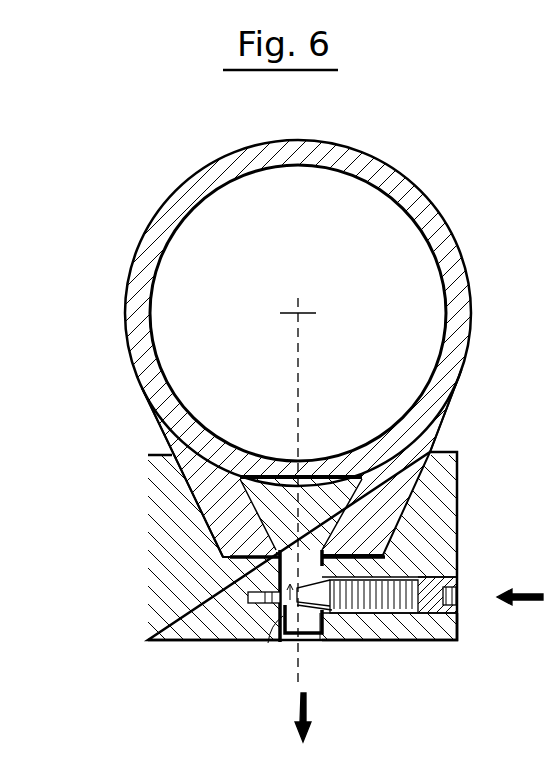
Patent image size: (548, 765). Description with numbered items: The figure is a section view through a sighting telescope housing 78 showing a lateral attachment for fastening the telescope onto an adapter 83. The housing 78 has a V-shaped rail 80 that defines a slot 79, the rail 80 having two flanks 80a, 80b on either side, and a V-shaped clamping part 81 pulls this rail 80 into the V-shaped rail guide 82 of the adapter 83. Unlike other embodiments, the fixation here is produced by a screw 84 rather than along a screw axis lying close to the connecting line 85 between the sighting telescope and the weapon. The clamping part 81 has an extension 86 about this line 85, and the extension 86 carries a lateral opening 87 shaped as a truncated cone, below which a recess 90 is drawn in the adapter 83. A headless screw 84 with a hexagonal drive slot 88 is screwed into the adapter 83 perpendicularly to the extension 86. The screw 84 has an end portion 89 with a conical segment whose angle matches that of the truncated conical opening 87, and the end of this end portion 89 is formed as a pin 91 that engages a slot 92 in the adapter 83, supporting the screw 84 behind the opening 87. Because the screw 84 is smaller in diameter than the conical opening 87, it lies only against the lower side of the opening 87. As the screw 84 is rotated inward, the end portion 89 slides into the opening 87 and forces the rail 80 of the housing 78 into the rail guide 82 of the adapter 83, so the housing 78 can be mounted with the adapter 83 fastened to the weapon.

The sighting telescope housing 78 is at (463, 251).
The slot 79 is at (327, 483).
The rail 80 is at (205, 510).
The left side edge of body 80a is at (208, 507).
The right side edge of body 80b is at (440, 437).
The clamping part 81 is at (268, 488).
The rail guide 82 is at (412, 497).
The adapter 83 is at (462, 645).
The screw 84 is at (430, 580).
The connecting line 85 is at (300, 364).
The extension 86 is at (295, 642).
The lateral opening 87 is at (278, 588).
The hexagonal drive slot 88 is at (458, 598).
The end portion 89 is at (312, 642).
The cavity 90 is at (316, 642).
The pin 91 is at (233, 643).
The slot 92 is at (250, 598).